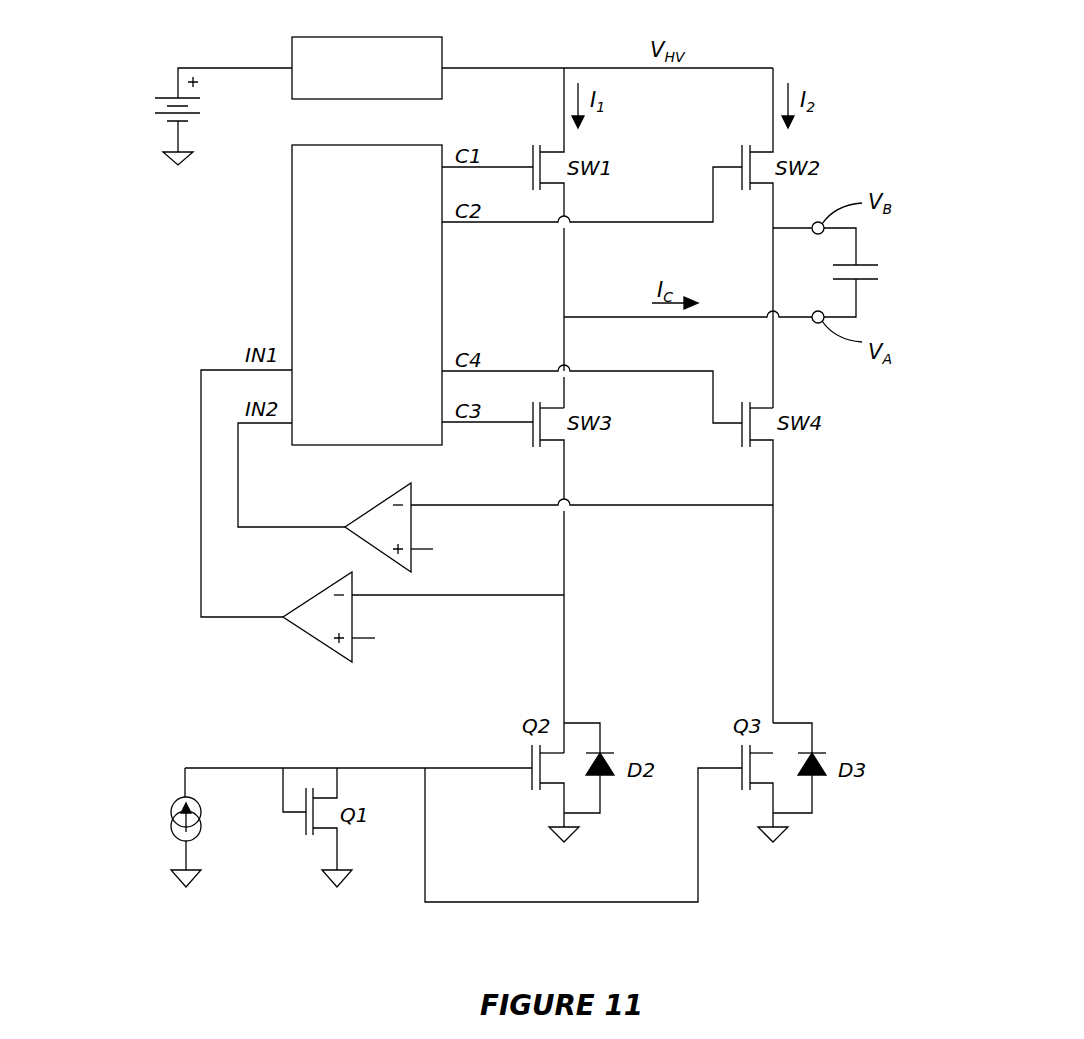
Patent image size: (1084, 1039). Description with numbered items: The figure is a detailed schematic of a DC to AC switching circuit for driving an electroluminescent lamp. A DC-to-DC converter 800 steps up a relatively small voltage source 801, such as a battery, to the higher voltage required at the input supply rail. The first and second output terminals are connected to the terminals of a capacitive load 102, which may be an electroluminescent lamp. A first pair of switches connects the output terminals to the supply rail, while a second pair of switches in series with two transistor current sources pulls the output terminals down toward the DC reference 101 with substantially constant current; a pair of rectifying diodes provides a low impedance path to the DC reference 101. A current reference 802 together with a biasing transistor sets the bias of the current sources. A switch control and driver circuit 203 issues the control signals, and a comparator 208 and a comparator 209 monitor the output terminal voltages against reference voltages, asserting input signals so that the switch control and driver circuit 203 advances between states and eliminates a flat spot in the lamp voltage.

The DC-to-DC converter 800 is at (382, 30).
The voltage source 801 is at (148, 107).
The switch control and driver circuit 203 is at (292, 212).
The comparator 209 is at (357, 512).
The comparator 208 is at (295, 598).
The current reference 802 is at (162, 820).
The DC reference 101 is at (543, 835).
The capacitive load 102 is at (878, 260).